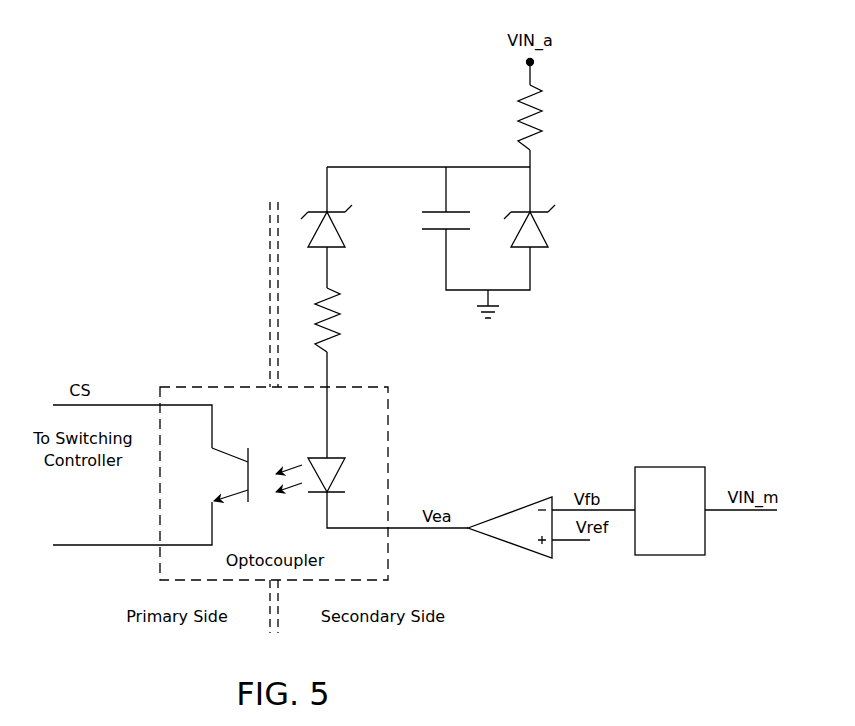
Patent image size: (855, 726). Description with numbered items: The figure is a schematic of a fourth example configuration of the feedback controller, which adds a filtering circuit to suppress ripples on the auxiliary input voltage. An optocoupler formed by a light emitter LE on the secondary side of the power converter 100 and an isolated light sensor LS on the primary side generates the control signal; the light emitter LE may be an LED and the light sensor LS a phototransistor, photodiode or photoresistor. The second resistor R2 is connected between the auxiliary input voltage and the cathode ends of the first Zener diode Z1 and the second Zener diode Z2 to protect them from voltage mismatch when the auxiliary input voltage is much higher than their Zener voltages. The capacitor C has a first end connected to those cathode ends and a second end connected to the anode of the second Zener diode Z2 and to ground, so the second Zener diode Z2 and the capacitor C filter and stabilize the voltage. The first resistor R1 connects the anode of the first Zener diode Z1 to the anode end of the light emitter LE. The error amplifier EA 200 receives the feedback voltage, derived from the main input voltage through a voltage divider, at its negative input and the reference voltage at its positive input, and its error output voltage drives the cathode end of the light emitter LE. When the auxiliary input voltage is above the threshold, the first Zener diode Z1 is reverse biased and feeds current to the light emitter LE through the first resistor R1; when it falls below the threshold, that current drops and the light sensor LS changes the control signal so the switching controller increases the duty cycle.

The error amplifier 200 is at (518, 506).
The power converter 100 is at (670, 511).
The first resistor R1 is at (313, 320).
The second resistor R2 is at (514, 117).
The first Zener diode Z1 is at (337, 226).
The second Zener diode Z2 is at (545, 226).
The capacitor C is at (433, 220).
The light sensor LS is at (214, 475).
The light emitter LE is at (325, 475).